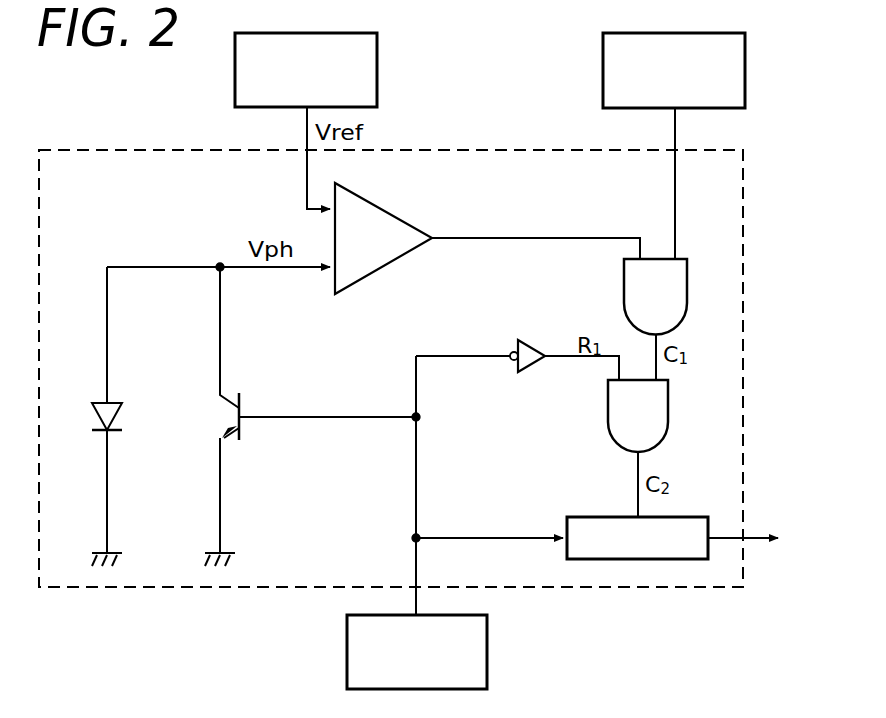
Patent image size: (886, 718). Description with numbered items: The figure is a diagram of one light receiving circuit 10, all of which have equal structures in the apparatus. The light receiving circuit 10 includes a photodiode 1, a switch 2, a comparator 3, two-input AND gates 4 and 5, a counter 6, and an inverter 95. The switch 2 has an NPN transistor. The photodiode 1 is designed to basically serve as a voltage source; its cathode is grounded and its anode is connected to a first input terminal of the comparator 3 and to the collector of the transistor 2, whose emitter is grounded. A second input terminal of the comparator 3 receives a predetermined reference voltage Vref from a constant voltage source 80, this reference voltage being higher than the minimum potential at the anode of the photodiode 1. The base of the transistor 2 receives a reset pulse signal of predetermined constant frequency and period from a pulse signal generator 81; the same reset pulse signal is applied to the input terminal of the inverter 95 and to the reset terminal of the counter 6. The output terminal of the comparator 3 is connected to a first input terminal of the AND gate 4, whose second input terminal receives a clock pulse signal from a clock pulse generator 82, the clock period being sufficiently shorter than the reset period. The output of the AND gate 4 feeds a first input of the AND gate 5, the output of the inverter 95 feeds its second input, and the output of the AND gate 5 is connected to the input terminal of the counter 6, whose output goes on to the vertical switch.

The photodiode 1 is at (116, 406).
The switch 2 is at (242, 398).
The comparator 3 is at (396, 212).
The AND gate 4 is at (688, 286).
The AND gate 5 is at (670, 418).
The counter 6 is at (686, 517).
The light receiving circuit 10 is at (747, 196).
The constant voltage source 80 is at (378, 58).
The pulse signal generator 81 is at (489, 644).
The clock pulse generator 82 is at (746, 58).
The inverter 95 is at (532, 338).